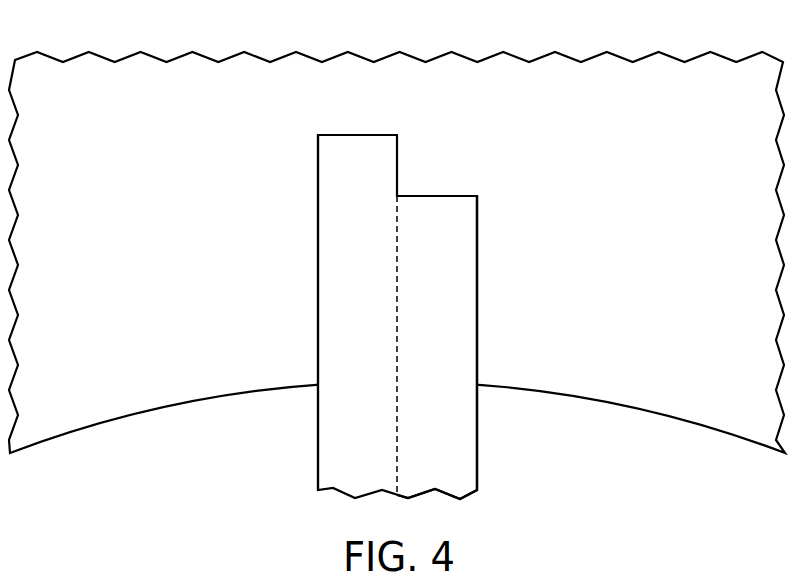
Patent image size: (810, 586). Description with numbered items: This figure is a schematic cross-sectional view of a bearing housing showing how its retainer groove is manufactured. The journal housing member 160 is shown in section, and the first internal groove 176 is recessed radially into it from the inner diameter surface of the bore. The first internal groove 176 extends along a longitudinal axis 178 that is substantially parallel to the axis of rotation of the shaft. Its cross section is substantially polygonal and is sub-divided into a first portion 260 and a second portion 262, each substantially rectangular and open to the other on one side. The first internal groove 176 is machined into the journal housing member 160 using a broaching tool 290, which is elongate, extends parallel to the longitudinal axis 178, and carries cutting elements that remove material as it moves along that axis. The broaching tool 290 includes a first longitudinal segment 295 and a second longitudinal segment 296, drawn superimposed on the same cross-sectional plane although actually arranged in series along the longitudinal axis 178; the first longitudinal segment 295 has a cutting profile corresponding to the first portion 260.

The journal housing member 160 is at (100, 115).
The first internal groove 176 is at (335, 312).
The longitudinal axis 178 is at (399, 305).
The first portion 260 is at (335, 235).
The second portion 262 is at (455, 267).
The broaching tool 290 is at (438, 218).
The first longitudinal segment 295 is at (382, 428).
The second longitudinal segment 296 is at (462, 428).